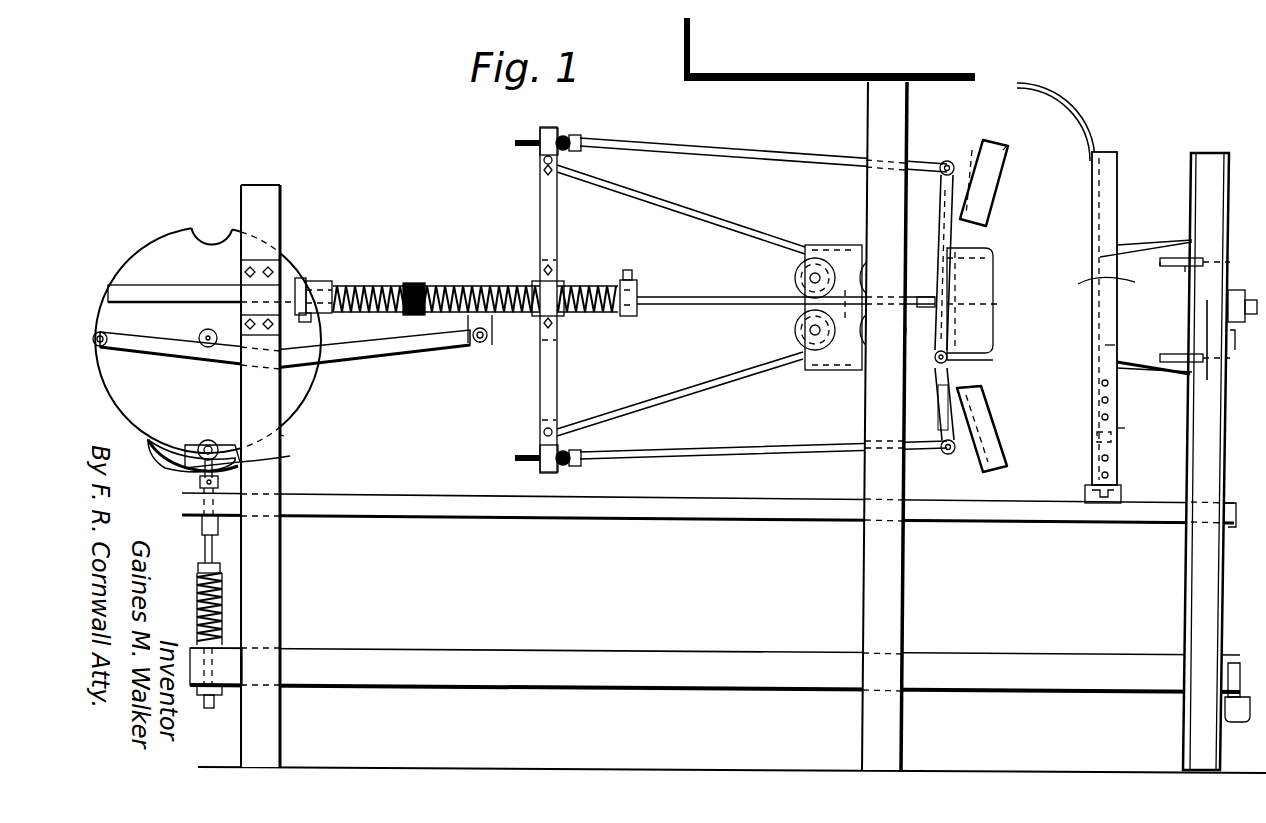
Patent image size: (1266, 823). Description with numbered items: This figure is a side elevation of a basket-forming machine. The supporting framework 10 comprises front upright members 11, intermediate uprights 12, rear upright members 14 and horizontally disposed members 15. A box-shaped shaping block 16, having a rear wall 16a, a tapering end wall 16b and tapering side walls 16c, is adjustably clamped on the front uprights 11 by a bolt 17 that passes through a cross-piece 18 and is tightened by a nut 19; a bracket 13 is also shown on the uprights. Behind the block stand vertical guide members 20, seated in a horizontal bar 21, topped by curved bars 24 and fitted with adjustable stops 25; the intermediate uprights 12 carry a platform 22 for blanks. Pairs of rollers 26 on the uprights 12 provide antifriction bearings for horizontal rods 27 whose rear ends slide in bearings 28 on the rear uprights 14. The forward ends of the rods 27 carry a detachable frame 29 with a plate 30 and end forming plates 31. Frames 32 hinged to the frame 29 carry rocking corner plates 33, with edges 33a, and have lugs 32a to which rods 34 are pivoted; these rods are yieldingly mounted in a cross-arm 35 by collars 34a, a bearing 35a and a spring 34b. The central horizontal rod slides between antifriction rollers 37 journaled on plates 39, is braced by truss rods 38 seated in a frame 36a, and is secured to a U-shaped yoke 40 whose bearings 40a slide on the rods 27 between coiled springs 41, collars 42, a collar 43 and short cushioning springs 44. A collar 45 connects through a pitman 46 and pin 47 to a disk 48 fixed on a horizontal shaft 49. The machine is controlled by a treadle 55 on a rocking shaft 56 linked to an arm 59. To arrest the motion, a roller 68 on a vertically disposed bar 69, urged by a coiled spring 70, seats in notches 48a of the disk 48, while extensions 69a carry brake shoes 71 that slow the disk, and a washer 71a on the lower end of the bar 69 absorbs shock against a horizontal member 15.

The supporting framework 10 is at (688, 524).
The front upright members 11 is at (1232, 440).
The intermediate uprights 12 is at (866, 120).
The bracket 13 is at (1192, 312).
The rear upright members 14 is at (284, 203).
The horizontally disposed members 15 is at (433, 657).
The shaping block 16 is at (1154, 306).
The rear wall 16a is at (1098, 350).
The tapering end wall 16b is at (1095, 275).
The tapering side walls 16c is at (1140, 248).
The bolt 17 is at (1247, 347).
The cross-piece 18 is at (1228, 300).
The nut 19 is at (1205, 345).
The guide members 20 is at (1118, 190).
The horizontal bar 21 is at (1122, 492).
The platform 22 is at (772, 72).
The curved bars 24 is at (1065, 92).
The stops or brackets 25 is at (1118, 428).
The rollers 26 is at (878, 262).
The horizontally disposed rods 27 is at (704, 297).
The bearings 28 is at (268, 285).
The detachable frame 29 is at (985, 355).
The plate 30 is at (995, 268).
The end forming plates 31 is at (998, 340).
The frames 32 is at (995, 215).
The ears or lugs 32a is at (950, 160).
The rocking corner plates 33 is at (945, 205).
The pad edge 33a is at (1008, 148).
The rods 34 is at (705, 148).
The collars 34a is at (535, 133).
The spring 34b is at (568, 136).
The cross-arm 35 is at (560, 368).
The bearing 35a is at (543, 162).
The frame 36a is at (812, 372).
The antifriction rollers 37 is at (795, 275).
The truss rods 38 is at (638, 200).
The plates 39 is at (810, 245).
The U-shaped yoke 40 is at (418, 280).
The bearings 40a is at (322, 283).
The coiled springs 41 is at (455, 285).
The collars 42 is at (636, 282).
The collar 43 is at (312, 318).
The short coiled springs 44 is at (250, 292).
The collar 45 is at (490, 325).
The link or pitman 46 is at (410, 368).
The pin 47 is at (104, 348).
The disk 48 is at (172, 262).
The notches 48a is at (218, 232).
The horizontal shaft 49 is at (200, 338).
The treadle 55 is at (1235, 707).
The rocking shaft 56 is at (1228, 668).
The arm 59 is at (200, 480).
The roller 68 is at (208, 440).
The vertically disposed bar 69 is at (202, 527).
The extensions 69a is at (290, 460).
The coiled spring 70 is at (218, 595).
The brake shoes 71 is at (150, 442).
The washer 71a is at (226, 700).